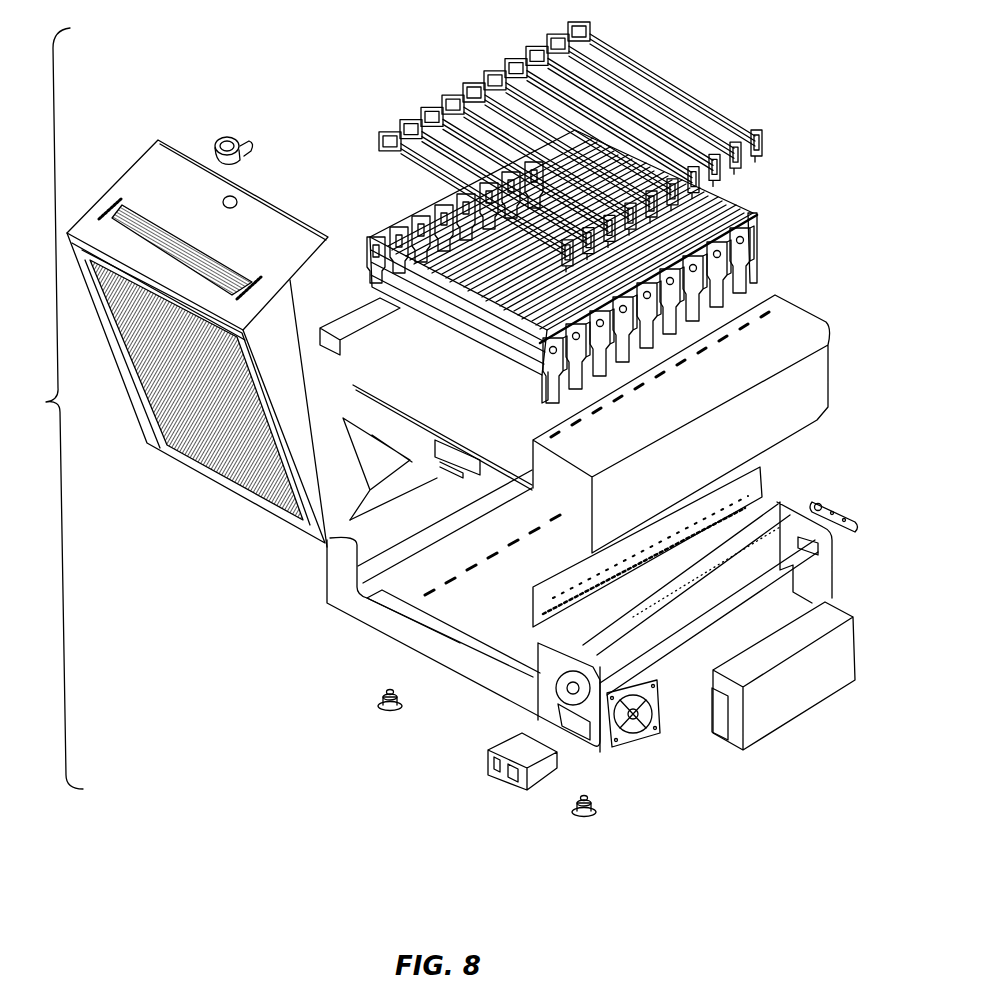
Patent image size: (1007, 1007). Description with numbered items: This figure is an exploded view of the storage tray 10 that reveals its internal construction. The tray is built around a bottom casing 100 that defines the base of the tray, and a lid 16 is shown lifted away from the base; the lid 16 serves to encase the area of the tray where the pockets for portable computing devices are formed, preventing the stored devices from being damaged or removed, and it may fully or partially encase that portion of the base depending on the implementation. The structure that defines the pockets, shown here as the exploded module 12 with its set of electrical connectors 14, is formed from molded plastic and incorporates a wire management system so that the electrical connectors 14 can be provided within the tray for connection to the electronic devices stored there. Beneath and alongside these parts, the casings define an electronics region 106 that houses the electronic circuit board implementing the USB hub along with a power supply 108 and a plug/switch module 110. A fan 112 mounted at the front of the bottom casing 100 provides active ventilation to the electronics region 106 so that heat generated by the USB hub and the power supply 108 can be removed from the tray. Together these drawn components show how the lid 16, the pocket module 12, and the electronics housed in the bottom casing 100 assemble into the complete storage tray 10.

The storage tray 10 is at (46, 408).
The battery module 12 is at (368, 232).
The electrical connectors 14 is at (503, 62).
The lid 16 is at (162, 173).
The bottom casing 100 is at (372, 615).
The electronics region 106 is at (821, 591).
The power supply 108 is at (775, 712).
The plug/switch module 110 is at (522, 748).
The fan 112 is at (647, 722).